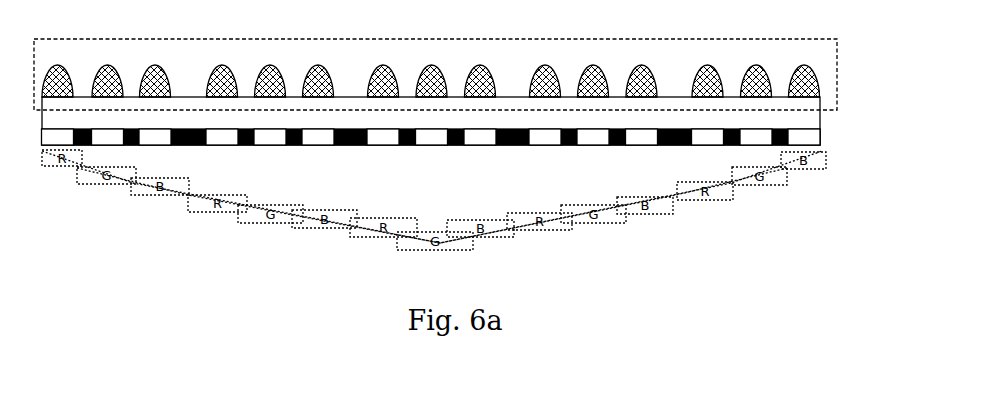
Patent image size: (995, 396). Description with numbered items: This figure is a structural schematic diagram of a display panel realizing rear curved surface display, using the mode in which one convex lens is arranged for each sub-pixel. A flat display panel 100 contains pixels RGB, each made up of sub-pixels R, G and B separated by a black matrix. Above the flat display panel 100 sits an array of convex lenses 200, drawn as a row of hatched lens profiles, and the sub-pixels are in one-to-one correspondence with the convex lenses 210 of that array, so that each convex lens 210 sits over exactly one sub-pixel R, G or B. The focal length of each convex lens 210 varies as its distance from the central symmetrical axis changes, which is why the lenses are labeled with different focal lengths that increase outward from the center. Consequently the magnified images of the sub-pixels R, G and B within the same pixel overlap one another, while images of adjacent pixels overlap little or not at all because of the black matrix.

The flat display panel 100 is at (822, 136).
The array of convex lenses 200 is at (838, 71).
The convex lens 210 is at (493, 73).